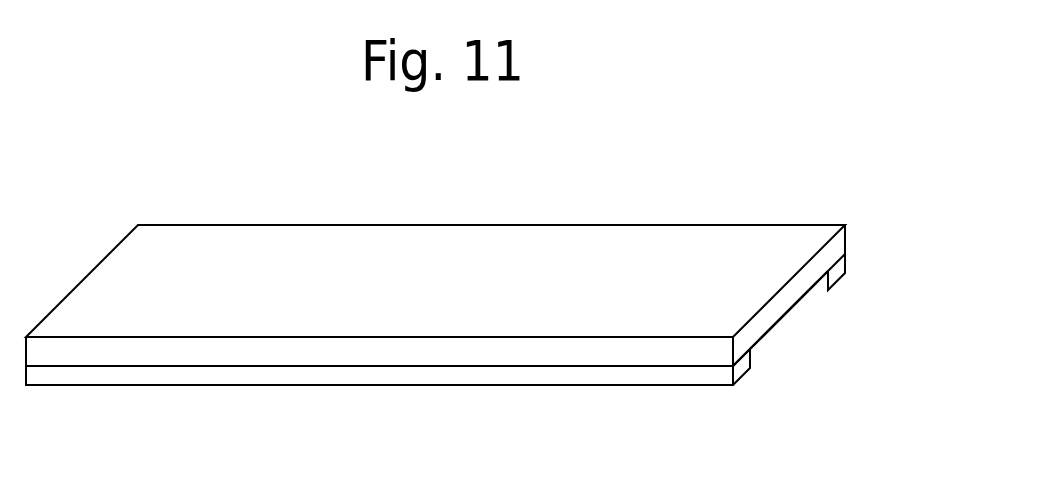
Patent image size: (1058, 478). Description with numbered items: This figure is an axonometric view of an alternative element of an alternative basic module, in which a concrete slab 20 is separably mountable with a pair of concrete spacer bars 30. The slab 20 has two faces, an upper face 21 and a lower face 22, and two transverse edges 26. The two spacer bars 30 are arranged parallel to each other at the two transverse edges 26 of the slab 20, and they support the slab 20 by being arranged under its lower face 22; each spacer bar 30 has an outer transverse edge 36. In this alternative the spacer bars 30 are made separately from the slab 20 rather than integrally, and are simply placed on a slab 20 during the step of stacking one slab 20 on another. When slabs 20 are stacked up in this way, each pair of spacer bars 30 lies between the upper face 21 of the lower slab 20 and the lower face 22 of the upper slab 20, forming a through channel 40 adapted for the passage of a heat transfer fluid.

The slab 20 is at (474, 295).
The upper face 21 is at (510, 250).
The lower face 22 is at (775, 330).
The transverse edge 26 is at (845, 247).
The outer transverse edge 36 is at (845, 262).
The spacer bar 30 is at (849, 292).
The through channel 40 is at (808, 326).